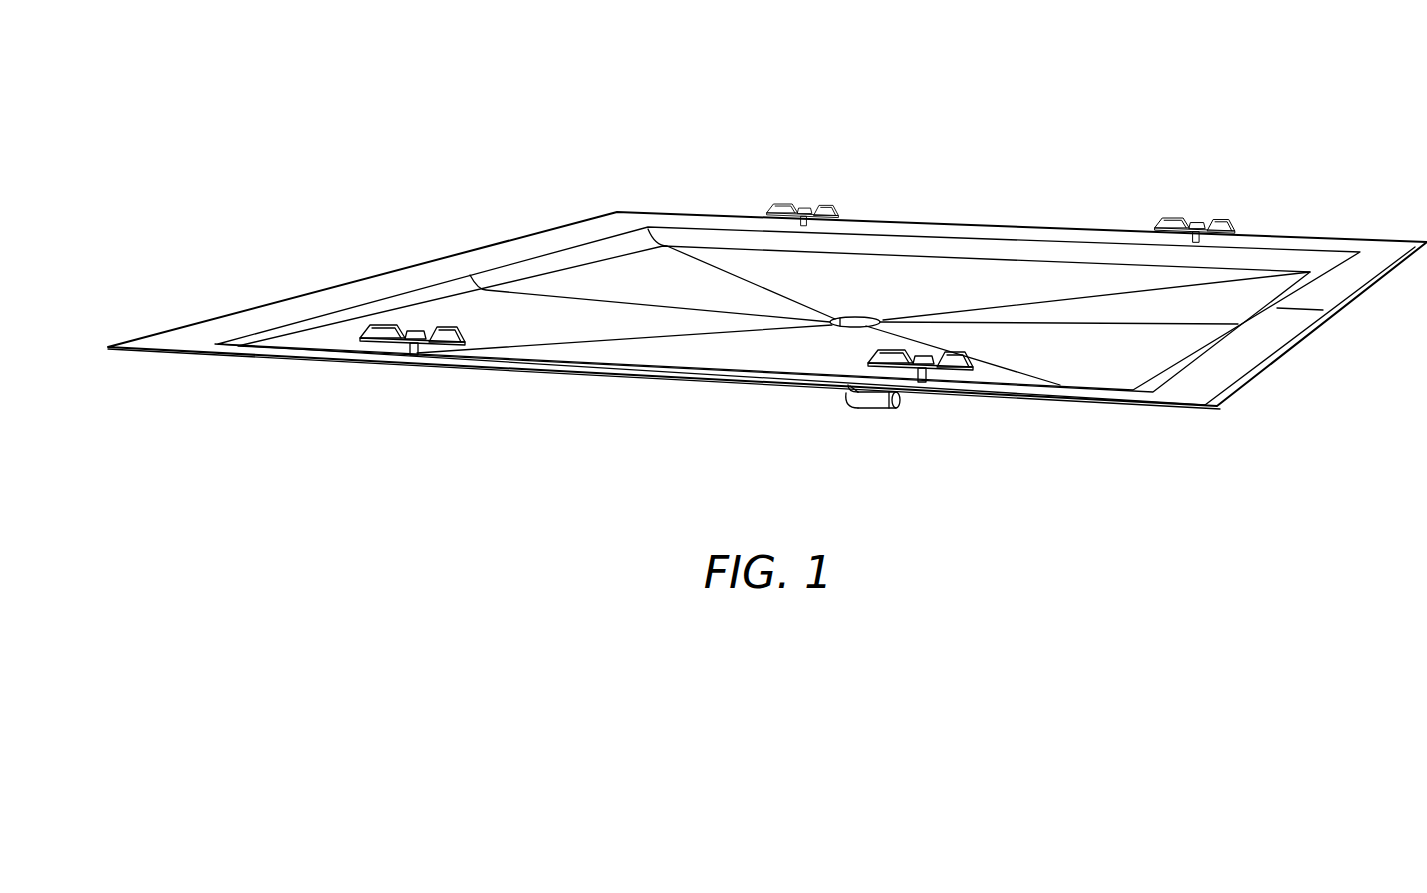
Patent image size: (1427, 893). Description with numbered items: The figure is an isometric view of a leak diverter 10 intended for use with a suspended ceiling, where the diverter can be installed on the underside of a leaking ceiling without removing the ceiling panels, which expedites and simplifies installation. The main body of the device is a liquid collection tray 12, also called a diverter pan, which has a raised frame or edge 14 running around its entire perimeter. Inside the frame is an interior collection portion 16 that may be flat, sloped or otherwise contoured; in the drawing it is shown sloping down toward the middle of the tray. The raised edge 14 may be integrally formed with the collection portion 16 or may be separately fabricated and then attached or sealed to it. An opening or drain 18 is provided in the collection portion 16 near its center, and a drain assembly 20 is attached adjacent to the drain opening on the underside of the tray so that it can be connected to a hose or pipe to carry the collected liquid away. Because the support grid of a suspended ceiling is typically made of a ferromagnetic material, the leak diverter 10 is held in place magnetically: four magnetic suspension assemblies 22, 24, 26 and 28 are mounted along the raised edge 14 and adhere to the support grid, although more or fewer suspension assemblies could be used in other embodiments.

The leak diverter 10 is at (1083, 120).
The liquid collection tray 12 is at (1081, 374).
The raised frame or edge 14 is at (1319, 238).
The interior collection portion 16 is at (1163, 352).
The drain 18 is at (852, 317).
The drain assembly 20 is at (818, 432).
The magnetic suspension assembly 22 is at (382, 337).
The magnetic suspension assembly 24 is at (952, 363).
The magnetic suspension assembly 26 is at (801, 205).
The magnetic suspension assembly 28 is at (1193, 217).